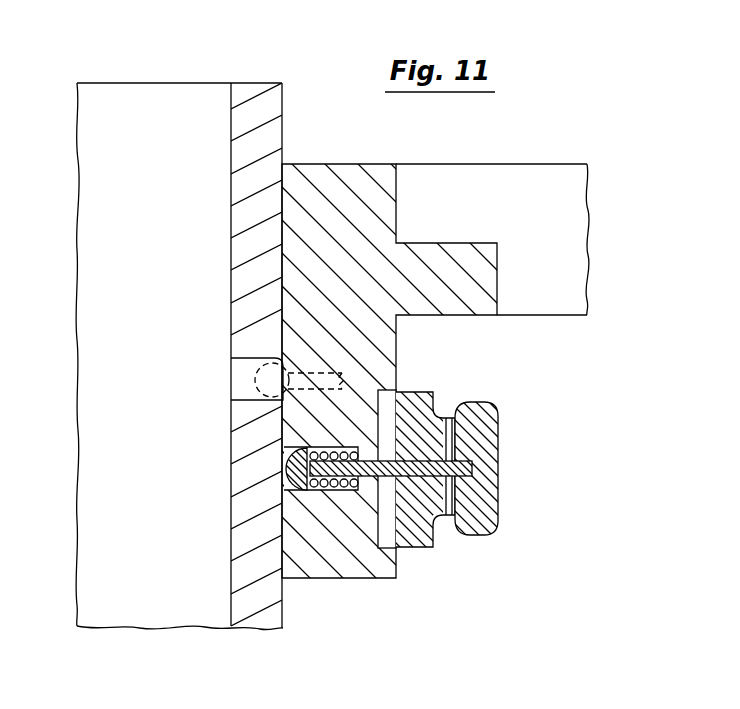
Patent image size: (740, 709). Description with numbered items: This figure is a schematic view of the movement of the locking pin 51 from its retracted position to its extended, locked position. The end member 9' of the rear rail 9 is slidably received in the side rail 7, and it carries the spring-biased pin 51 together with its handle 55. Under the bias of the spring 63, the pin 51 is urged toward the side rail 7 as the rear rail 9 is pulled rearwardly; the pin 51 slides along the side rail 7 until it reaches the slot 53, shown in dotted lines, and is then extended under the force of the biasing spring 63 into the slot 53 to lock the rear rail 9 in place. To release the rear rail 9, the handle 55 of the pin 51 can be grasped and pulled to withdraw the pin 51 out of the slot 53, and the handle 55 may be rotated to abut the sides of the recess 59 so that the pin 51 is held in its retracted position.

The side rail 7 is at (208, 204).
The rear rail 9 is at (492, 197).
The end member of rear rail 9' is at (370, 400).
The locking pin 51 is at (290, 469).
The slot 53 is at (247, 360).
The handle 55 is at (498, 447).
The recess 59 is at (386, 402).
The spring 63 is at (346, 447).